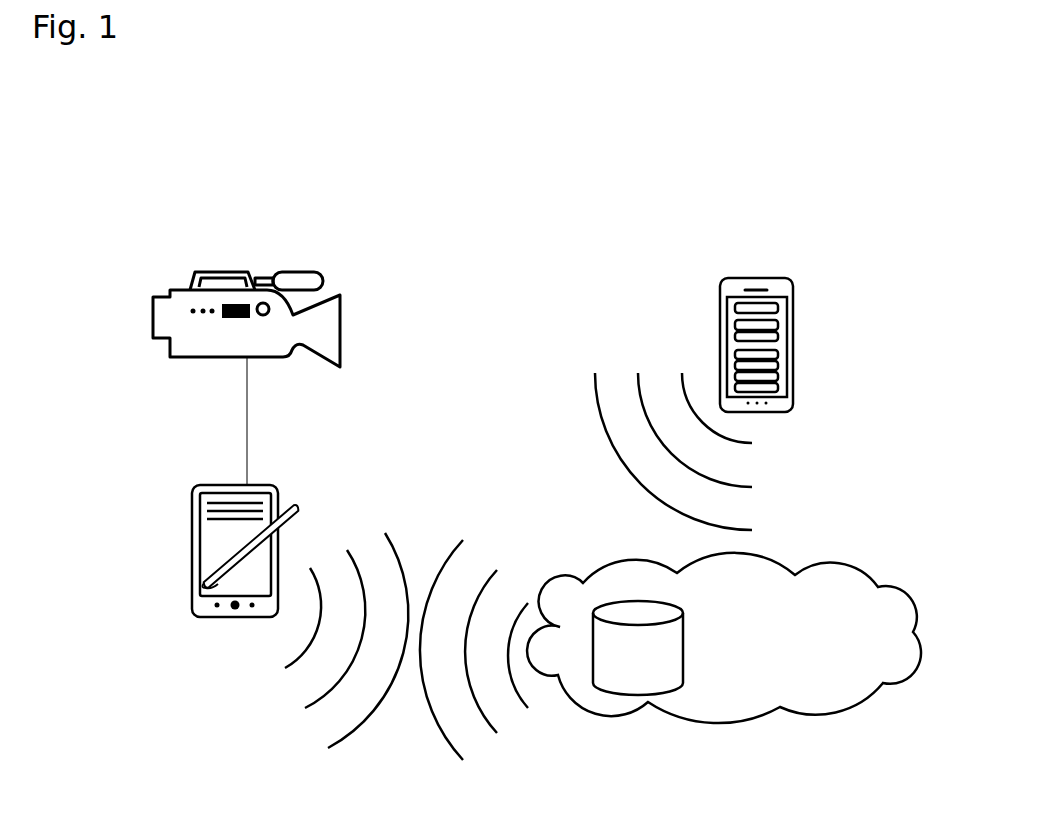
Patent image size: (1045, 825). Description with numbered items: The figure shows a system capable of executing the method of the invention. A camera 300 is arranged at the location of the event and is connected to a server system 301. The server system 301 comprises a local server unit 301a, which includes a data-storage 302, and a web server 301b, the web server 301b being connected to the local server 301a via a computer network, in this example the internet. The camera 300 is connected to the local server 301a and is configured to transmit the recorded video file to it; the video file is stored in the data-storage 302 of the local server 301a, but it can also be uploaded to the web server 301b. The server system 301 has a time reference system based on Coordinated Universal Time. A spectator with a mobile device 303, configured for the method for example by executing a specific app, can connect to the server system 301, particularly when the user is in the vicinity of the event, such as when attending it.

The camera 300 is at (242, 272).
The server system 301 is at (587, 610).
The local server unit 301a is at (245, 620).
The web server 301b is at (673, 644).
The data-storage 302 is at (192, 550).
The mobile device 303 is at (720, 345).